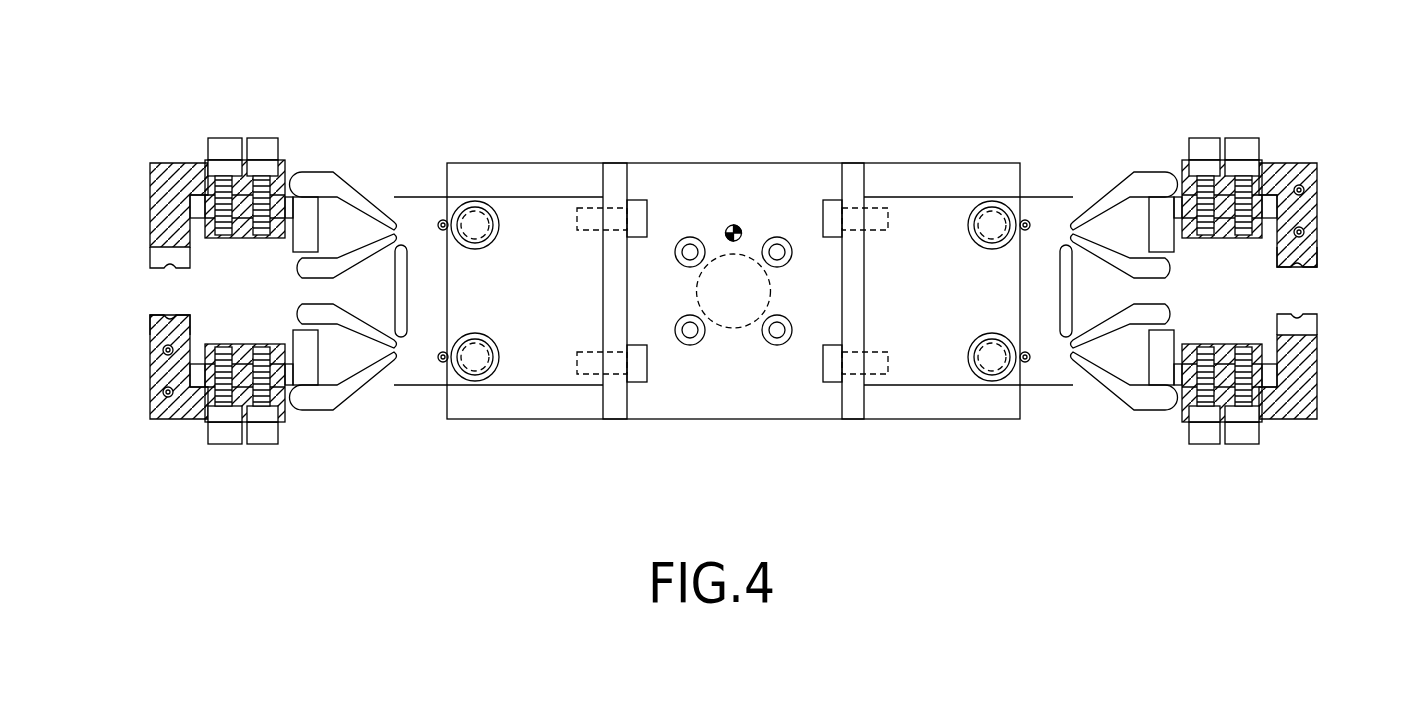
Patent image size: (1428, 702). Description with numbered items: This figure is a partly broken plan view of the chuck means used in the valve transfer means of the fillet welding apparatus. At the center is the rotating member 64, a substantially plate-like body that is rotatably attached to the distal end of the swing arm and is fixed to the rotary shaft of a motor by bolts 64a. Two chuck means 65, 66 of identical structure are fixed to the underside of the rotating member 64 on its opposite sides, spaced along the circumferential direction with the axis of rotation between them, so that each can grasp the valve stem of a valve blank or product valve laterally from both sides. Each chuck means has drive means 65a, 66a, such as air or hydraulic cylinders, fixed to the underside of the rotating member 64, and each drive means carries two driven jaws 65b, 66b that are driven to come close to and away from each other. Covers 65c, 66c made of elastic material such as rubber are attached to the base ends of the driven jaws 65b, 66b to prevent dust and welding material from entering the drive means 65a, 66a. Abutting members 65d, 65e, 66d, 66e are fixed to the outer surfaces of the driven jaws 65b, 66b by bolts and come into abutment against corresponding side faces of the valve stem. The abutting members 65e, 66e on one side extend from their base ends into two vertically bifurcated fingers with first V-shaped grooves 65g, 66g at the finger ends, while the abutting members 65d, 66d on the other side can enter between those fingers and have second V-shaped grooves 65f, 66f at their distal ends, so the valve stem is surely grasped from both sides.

The rotating member 64 is at (742, 402).
The bolts 64a is at (690, 237).
The chuck means 65 is at (1088, 130).
The drive means 65a is at (1068, 372).
The driven jaws 65b is at (1220, 238).
The cover 65c is at (1138, 172).
The abutting member 65d is at (1300, 420).
The abutting member 65e is at (1298, 163).
The second V-shaped groove 65f is at (1300, 316).
The first V-shaped groove 65g is at (1302, 268).
The chuck means 66 is at (298, 152).
The drive means 66a is at (400, 372).
The driven jaws 66b is at (243, 238).
The cover 66c is at (332, 172).
The abutting member 66d is at (168, 163).
The abutting member 66e is at (168, 420).
The second V-shaped groove 66f is at (172, 316).
The first V-shaped groove 66g is at (170, 268).